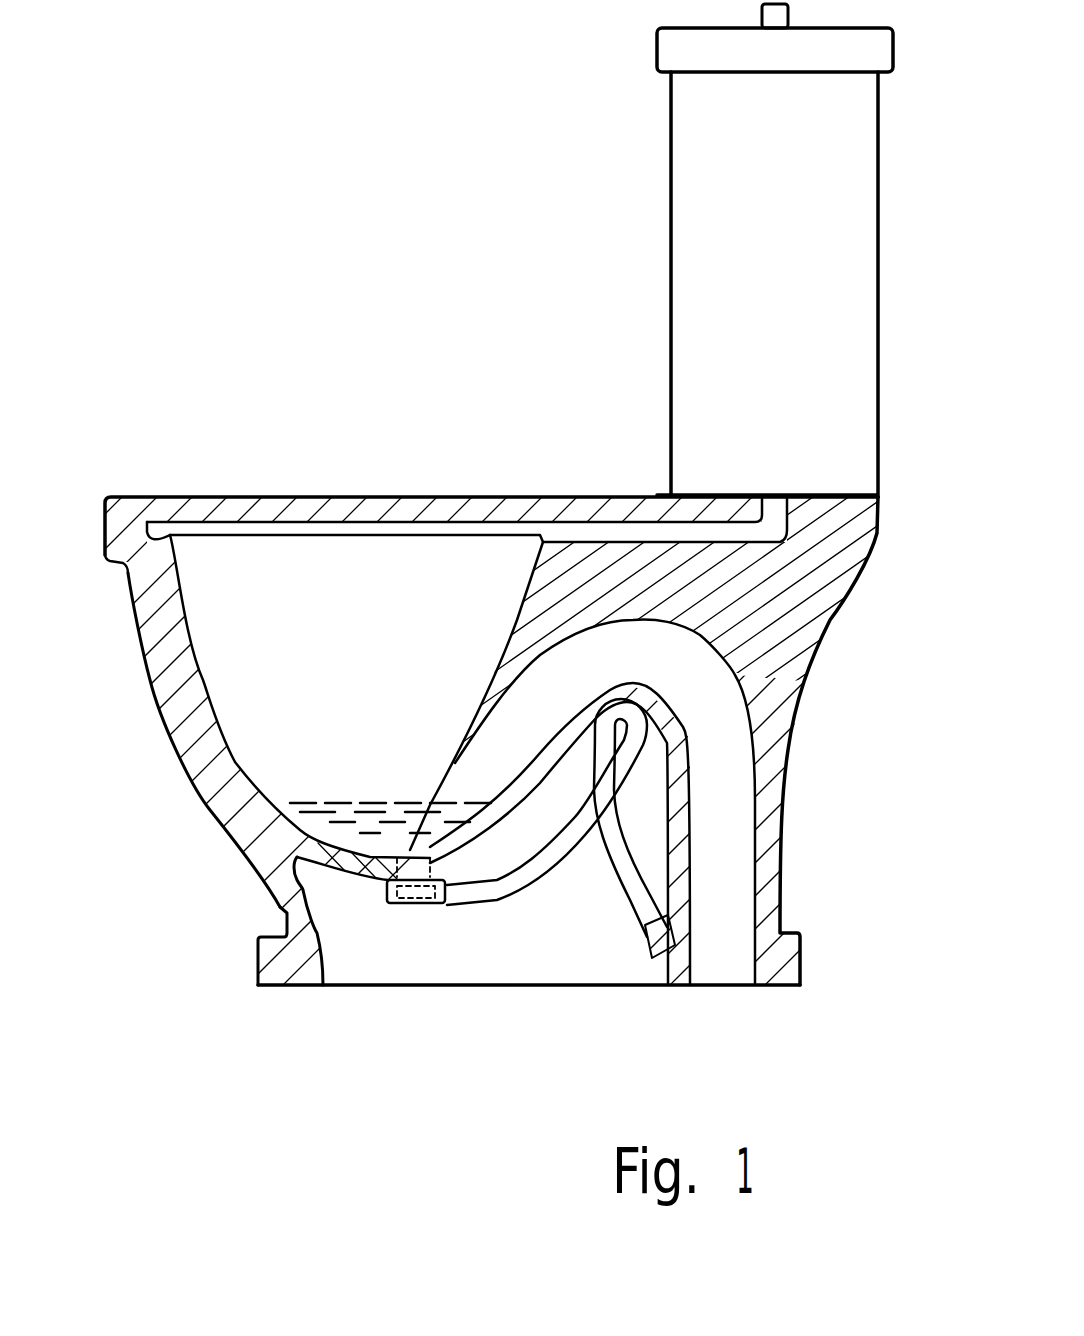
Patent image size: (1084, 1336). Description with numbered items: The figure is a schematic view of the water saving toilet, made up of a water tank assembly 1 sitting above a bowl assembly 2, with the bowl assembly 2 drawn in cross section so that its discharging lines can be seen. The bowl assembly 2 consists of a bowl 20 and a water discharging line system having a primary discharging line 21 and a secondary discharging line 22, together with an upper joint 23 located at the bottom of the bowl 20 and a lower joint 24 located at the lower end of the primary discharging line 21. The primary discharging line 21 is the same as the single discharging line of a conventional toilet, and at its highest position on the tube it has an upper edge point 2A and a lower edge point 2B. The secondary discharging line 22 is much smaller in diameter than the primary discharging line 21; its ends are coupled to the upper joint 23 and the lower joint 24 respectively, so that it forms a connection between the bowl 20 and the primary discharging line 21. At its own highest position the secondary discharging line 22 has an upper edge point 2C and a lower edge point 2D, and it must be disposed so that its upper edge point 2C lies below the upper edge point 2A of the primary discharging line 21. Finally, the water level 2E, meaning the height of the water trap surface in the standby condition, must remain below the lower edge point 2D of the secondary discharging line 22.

The water tank assembly 1 is at (889, 305).
The bowl assembly 2 is at (138, 706).
The bowl 20 is at (210, 793).
The primary discharging line 21 is at (733, 923).
The secondary discharging line 22 is at (630, 900).
The upper joint 23 is at (410, 903).
The lower joint 24 is at (660, 958).
The upper edge point 2A is at (662, 617).
The lower edge point 2B is at (657, 678).
The upper edge point 2C is at (665, 697).
The lower edge point 2D is at (683, 735).
The water level 2E is at (383, 800).